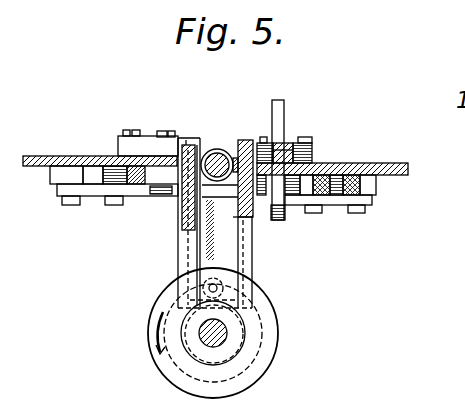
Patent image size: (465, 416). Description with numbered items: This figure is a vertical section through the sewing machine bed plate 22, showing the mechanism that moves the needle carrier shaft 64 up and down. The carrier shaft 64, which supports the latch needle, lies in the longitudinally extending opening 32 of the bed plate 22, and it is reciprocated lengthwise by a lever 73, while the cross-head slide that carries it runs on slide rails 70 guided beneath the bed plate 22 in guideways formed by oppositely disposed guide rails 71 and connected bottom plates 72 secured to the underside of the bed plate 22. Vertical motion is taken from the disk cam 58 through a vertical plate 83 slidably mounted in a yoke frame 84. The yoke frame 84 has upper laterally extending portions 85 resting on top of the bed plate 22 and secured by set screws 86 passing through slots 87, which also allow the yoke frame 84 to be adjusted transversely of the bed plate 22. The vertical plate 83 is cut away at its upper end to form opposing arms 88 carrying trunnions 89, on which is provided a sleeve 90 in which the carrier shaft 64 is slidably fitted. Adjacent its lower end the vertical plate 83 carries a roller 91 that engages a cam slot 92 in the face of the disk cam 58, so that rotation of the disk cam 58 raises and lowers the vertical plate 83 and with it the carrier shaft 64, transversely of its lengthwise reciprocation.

The bed plate 22 is at (51, 146).
The longitudinally extending opening 32 is at (188, 142).
The disk cam 58 is at (268, 362).
The carrier shaft 64 is at (236, 157).
The slide rails 70 is at (110, 181).
The guide rails 71 is at (110, 178).
The bottom plates 72 is at (58, 188).
The lever 73 is at (279, 99).
The vertical plate 83 is at (208, 255).
The yoke frame 84 is at (248, 243).
The upper laterally extending portions 85 is at (147, 136).
The set screws 86 is at (122, 135).
The slots 87 is at (308, 137).
The opposing arms 88 is at (194, 140).
The trunnions 89 is at (177, 182).
The sleeve 90 is at (210, 150).
The roller 91 is at (250, 283).
The cam slot 92 is at (258, 333).